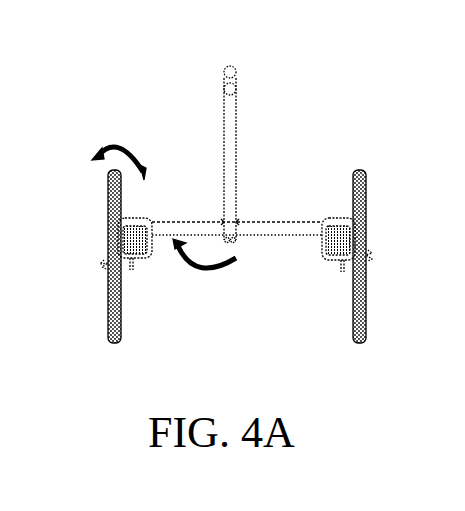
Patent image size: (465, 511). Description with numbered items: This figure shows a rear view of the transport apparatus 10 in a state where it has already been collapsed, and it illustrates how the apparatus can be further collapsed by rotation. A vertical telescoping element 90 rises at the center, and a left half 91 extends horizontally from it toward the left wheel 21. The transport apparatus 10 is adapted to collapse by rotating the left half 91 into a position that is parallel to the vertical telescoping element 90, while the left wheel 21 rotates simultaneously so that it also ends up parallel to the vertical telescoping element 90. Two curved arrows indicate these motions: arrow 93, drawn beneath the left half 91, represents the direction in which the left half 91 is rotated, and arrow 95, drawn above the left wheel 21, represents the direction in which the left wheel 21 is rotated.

The transport apparatus 10 is at (130, 62).
The left wheel 21 is at (97, 300).
The vertical telescoping element 90 is at (255, 139).
The left half 91 is at (186, 218).
The arrow 93 is at (204, 269).
The arrow 95 is at (119, 150).